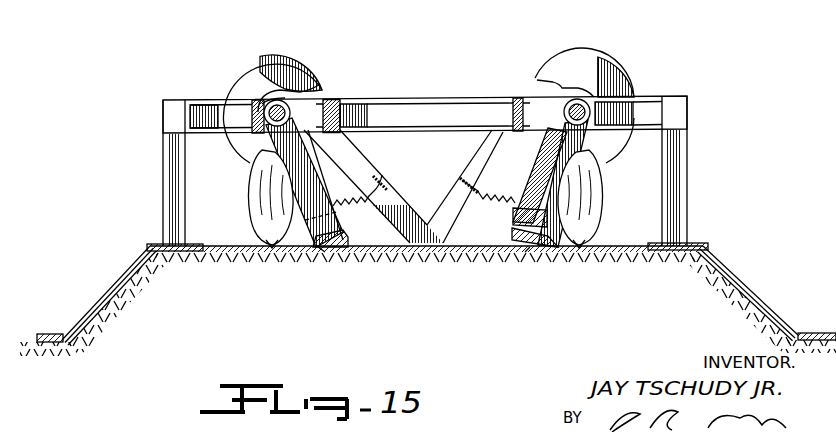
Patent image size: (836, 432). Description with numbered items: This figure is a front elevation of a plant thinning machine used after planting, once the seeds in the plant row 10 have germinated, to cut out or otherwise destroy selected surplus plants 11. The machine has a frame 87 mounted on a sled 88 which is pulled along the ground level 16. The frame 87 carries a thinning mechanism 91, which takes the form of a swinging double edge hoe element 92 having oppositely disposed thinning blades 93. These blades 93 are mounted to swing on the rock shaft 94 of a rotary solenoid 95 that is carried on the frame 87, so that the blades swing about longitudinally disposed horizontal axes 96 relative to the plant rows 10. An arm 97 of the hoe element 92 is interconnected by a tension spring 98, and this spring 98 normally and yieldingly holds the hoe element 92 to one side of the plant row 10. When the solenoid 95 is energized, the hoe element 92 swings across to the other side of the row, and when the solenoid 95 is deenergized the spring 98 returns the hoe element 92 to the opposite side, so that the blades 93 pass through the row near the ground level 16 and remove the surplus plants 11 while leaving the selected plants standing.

The plant row 10 is at (268, 244).
The plants 11 is at (252, 190).
The ground level 16 is at (232, 250).
The frame 87 is at (445, 98).
The sled 88 is at (118, 280).
The thinning mechanism 91 is at (322, 167).
The double edge hoe element 92 is at (323, 250).
The thinning blades 93 is at (318, 246).
The rock shaft 94 is at (292, 97).
The rotary solenoid 95 is at (295, 63).
The horizontal axes 96 is at (290, 113).
The arm 97 is at (324, 195).
The tension spring 98 is at (371, 204).